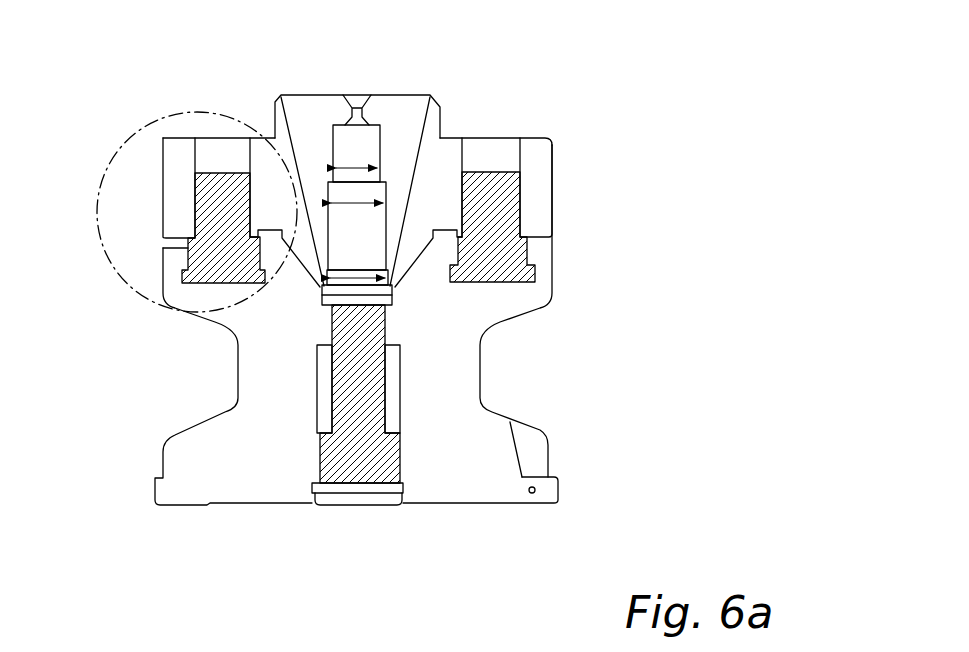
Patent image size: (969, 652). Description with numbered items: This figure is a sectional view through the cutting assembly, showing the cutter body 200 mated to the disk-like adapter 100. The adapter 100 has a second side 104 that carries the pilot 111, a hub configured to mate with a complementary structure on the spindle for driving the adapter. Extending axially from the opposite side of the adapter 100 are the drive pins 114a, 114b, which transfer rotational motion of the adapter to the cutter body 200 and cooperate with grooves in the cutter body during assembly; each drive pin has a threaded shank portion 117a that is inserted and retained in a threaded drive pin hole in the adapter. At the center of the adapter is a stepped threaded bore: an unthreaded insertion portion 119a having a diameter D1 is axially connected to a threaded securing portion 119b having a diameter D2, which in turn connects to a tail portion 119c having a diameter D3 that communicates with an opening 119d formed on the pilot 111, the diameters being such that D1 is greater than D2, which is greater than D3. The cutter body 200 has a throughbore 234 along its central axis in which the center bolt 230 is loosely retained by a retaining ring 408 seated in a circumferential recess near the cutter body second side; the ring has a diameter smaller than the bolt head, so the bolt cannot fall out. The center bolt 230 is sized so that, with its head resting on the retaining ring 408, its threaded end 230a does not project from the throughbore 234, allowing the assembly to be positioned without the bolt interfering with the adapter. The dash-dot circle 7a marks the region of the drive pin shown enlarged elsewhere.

The detail circle 7a is at (118, 148).
The adapter 100 is at (537, 177).
The second side 104 is at (533, 138).
The pilot 111 is at (413, 95).
The drive pin 114a is at (185, 255).
The drive pin 114b is at (520, 252).
The threaded shank portion 117a is at (200, 218).
The unthreaded insertion portion 119a is at (275, 104).
The threaded securing portion 119b is at (440, 108).
The tail portion 119c is at (342, 137).
The opening 119d is at (358, 95).
The cutter body 200 is at (477, 314).
The center bolt 230 is at (390, 417).
The threaded end 230a is at (368, 375).
The throughbore 234 is at (322, 407).
The retaining ring 408 is at (398, 484).
The diameter of the insertion portion D1 is at (358, 290).
The diameter of the securing portion D2 is at (382, 207).
The diameter of the tail portion D3 is at (360, 165).